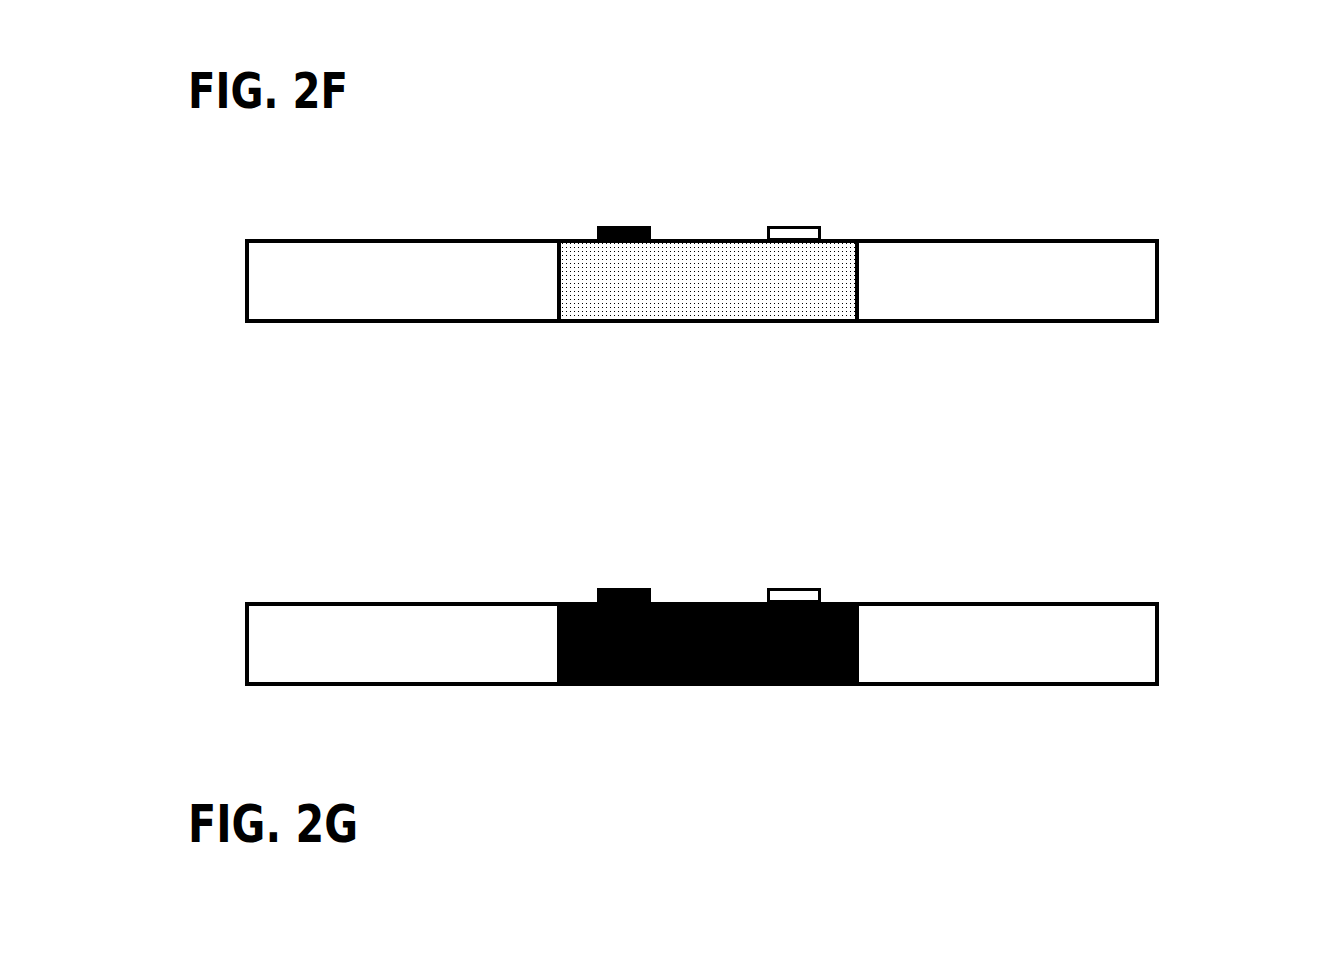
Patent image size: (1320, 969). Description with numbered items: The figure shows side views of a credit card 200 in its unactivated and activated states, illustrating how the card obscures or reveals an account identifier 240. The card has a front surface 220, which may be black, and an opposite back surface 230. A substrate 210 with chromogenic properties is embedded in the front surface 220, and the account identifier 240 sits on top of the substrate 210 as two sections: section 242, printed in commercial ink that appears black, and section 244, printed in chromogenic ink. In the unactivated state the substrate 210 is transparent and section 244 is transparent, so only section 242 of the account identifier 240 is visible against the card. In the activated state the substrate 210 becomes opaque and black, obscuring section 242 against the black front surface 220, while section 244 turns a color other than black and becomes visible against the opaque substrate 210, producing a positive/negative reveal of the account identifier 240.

In FIG. 2F, the credit card 200 is at (776, 233).
In FIG. 2G, the credit card 200 is at (776, 619).
In FIG. 2F, the substrate 210 is at (837, 283).
In FIG. 2G, the substrate 210 is at (843, 602).
In FIG. 2F, the front surface 220 is at (326, 237).
In FIG. 2G, the front surface 220 is at (970, 600).
In FIG. 2F, the back surface 230 is at (458, 328).
In FIG. 2G, the back surface 230 is at (1102, 688).
In FIG. 2F, the account identifier 240 is at (702, 238).
In FIG. 2G, the account identifier 240 is at (700, 600).
In FIG. 2F, the section 242 is at (627, 222).
In FIG. 2G, the section 242 is at (624, 586).
In FIG. 2F, the section 244 is at (805, 220).
In FIG. 2G, the section 244 is at (797, 600).